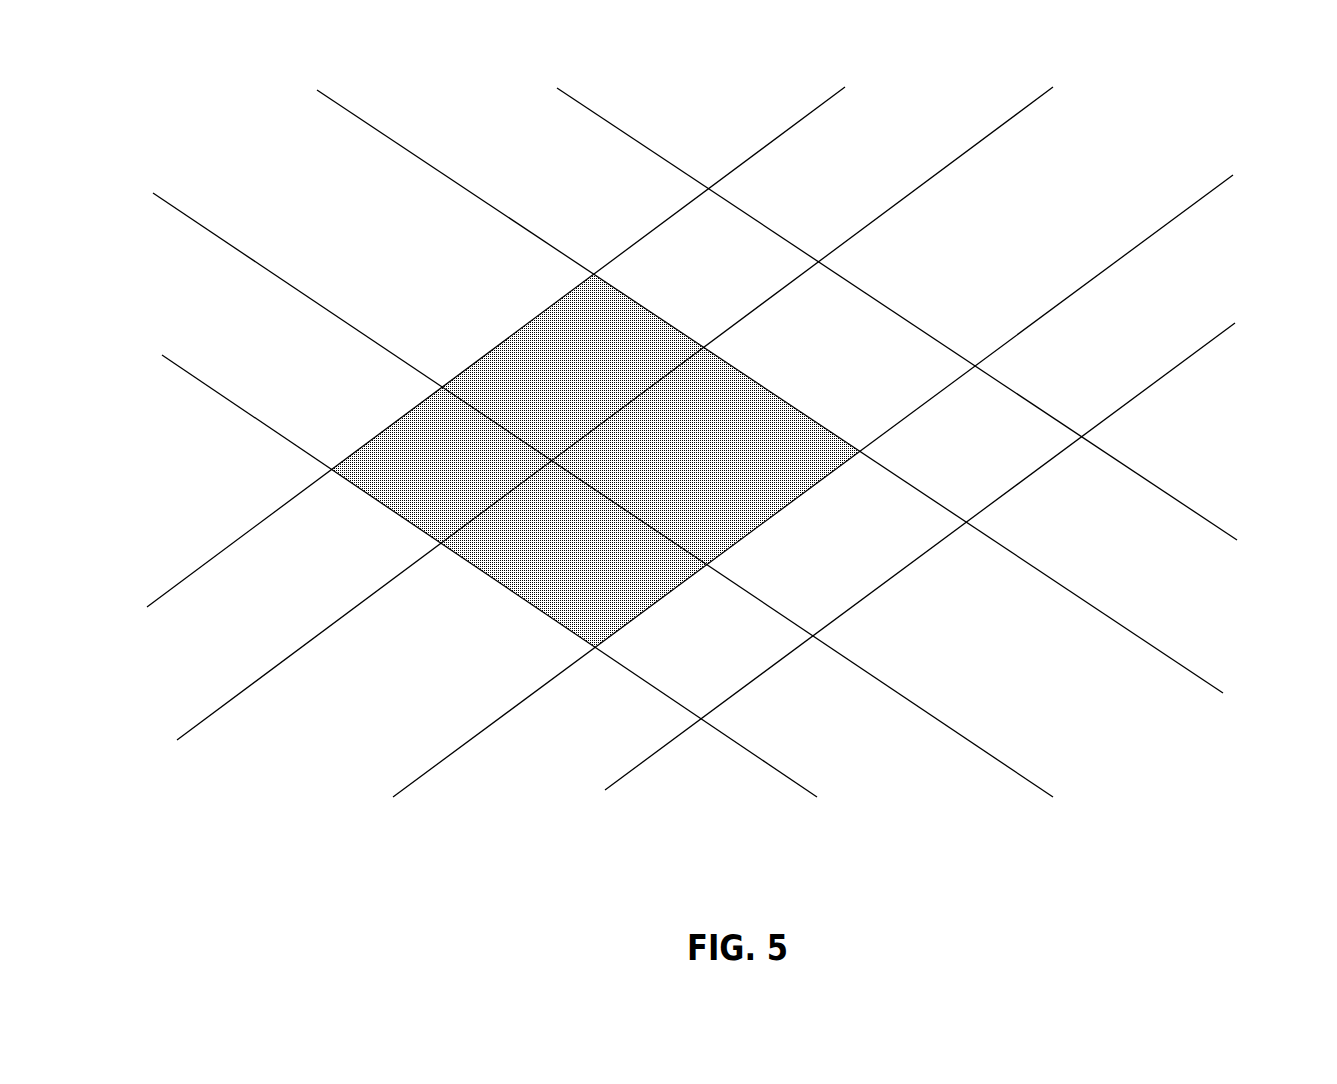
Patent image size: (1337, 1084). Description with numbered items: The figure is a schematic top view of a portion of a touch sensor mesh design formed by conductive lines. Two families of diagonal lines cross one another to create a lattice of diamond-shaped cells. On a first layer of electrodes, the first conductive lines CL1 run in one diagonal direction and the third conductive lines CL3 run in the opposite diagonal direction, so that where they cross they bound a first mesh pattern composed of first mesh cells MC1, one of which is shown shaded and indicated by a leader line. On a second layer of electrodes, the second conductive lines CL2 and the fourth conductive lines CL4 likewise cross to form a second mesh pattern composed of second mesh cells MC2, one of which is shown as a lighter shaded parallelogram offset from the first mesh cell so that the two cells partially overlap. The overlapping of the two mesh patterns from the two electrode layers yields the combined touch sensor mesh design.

The first conductive lines CL1 is at (670, 424).
The second conductive lines CL2 is at (672, 420).
The third conductive lines CL3 is at (709, 424).
The fourth conductive lines CL4 is at (754, 427).
The first mesh cells MC1 is at (463, 592).
The second mesh cells MC2 is at (912, 593).